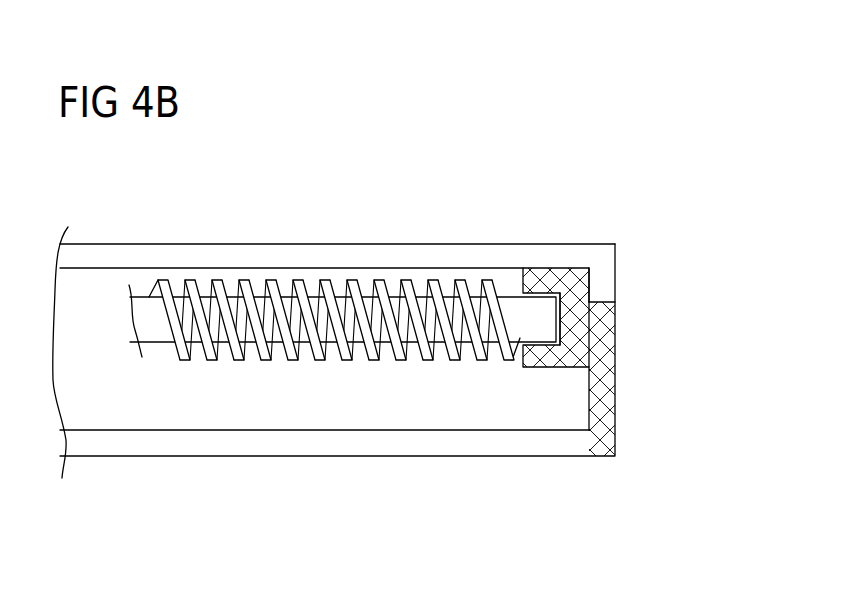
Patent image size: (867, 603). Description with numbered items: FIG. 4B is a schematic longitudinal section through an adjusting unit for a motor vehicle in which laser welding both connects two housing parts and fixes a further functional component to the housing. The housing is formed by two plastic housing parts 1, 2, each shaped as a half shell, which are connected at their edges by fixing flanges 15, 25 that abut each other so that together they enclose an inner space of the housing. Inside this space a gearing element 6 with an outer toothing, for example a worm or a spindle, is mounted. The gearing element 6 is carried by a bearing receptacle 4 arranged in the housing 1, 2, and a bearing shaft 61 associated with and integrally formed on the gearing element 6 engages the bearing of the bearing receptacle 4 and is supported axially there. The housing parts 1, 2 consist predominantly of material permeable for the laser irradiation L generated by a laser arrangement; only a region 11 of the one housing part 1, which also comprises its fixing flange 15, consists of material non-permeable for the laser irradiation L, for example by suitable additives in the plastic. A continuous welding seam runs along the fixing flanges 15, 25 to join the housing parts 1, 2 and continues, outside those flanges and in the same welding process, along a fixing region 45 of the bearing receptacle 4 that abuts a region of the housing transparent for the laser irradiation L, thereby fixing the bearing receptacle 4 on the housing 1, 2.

The housing part 1 is at (270, 456).
The housing part 2 is at (327, 243).
The bearing receptacle 4 is at (553, 370).
The gearing element 6 is at (346, 365).
The region 11 is at (615, 415).
The fixing flange 15 is at (603, 312).
The fixing flange 25 is at (606, 282).
The fixing region 45 is at (568, 285).
The bearing shaft 61 is at (518, 333).
The laser irradiation L is at (553, 262).